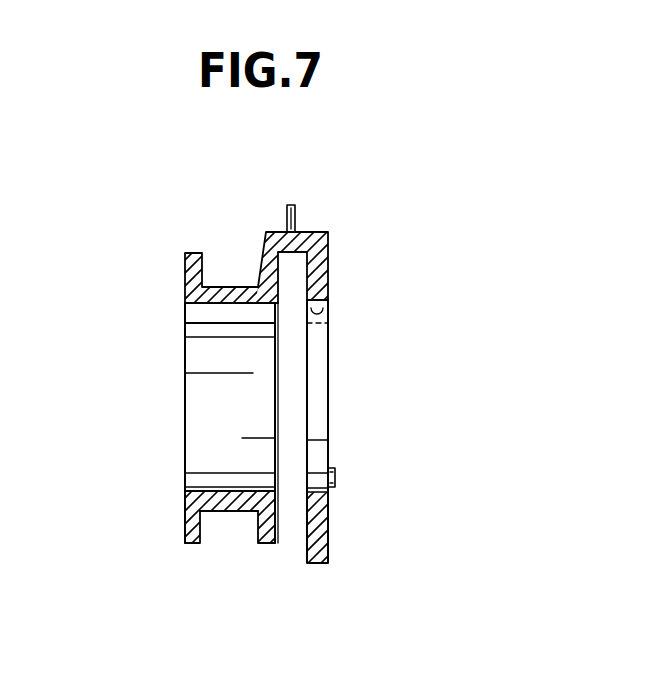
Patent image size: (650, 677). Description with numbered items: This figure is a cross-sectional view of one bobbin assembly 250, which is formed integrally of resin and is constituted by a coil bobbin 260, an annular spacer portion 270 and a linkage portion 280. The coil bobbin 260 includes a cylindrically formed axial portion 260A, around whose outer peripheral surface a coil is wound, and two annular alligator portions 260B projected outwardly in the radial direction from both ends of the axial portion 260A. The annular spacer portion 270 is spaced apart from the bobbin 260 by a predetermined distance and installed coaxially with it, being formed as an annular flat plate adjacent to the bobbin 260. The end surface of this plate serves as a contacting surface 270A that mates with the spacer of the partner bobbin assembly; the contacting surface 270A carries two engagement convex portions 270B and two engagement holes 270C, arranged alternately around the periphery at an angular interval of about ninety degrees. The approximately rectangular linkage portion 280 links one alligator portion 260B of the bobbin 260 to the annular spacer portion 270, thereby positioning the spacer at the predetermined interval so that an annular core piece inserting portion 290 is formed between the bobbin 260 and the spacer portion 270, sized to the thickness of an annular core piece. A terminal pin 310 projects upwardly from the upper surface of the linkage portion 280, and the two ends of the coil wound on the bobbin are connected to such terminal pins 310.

The bobbin assembly 250 is at (340, 240).
The coil bobbin 260 is at (185, 292).
The axial portion 260A is at (213, 508).
The annular alligator portion 260B is at (187, 515).
The annular spacer portion 270 is at (320, 397).
The contacting surface 270A is at (327, 547).
The engagement convex portion 270B is at (335, 480).
The engagement hole 270C is at (323, 317).
The linkage portion 280 is at (280, 233).
The annular core piece inserting portion 290 is at (292, 497).
The terminal pin 310 is at (290, 205).